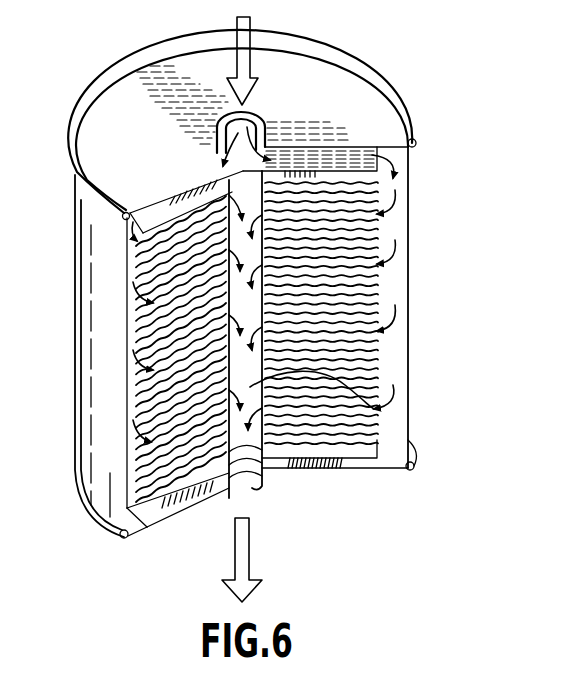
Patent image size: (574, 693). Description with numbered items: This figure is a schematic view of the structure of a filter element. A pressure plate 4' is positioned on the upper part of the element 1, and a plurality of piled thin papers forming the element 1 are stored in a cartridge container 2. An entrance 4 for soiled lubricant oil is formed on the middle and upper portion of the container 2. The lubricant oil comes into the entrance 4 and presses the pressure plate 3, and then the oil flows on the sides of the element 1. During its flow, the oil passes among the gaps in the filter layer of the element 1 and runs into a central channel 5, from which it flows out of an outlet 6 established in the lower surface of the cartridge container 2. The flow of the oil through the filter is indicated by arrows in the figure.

The element 1 is at (367, 358).
The cartridge container 2 is at (411, 242).
The pressure plate 3 is at (351, 152).
The entrance 4 is at (260, 91).
The pressure plate 4' is at (233, 125).
The central channel 5 is at (380, 409).
The outlet 6 is at (255, 486).